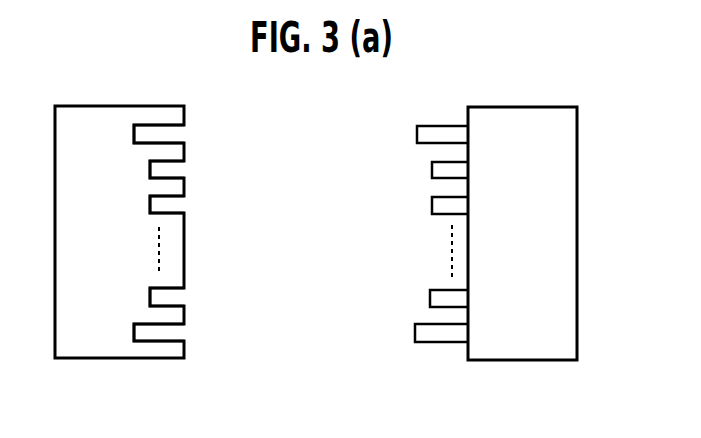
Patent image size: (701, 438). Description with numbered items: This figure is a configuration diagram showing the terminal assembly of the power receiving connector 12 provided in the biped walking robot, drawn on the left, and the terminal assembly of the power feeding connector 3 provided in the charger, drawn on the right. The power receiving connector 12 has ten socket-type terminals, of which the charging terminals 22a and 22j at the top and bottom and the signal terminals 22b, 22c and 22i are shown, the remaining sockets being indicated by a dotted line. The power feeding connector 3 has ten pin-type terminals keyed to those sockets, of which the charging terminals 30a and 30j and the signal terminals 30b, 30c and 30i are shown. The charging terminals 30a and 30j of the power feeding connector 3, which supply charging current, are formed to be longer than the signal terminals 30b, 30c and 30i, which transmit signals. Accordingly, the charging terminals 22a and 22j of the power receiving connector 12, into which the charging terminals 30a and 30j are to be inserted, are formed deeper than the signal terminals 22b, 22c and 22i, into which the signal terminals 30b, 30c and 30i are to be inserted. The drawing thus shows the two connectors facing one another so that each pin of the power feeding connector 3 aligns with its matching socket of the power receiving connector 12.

The power receiving connector 12 is at (130, 106).
The power feeding connector 3 is at (527, 107).
The charging terminal 22a is at (165, 128).
The signal terminal 22b is at (165, 164).
The signal terminal 22c is at (165, 199).
The signal terminal 22i is at (165, 291).
The charging terminal 22j is at (165, 327).
The charging terminal 30a is at (417, 134).
The signal terminal 30b is at (432, 170).
The signal terminal 30c is at (432, 206).
The signal terminal 30i is at (430, 299).
The charging terminal 30j is at (415, 334).